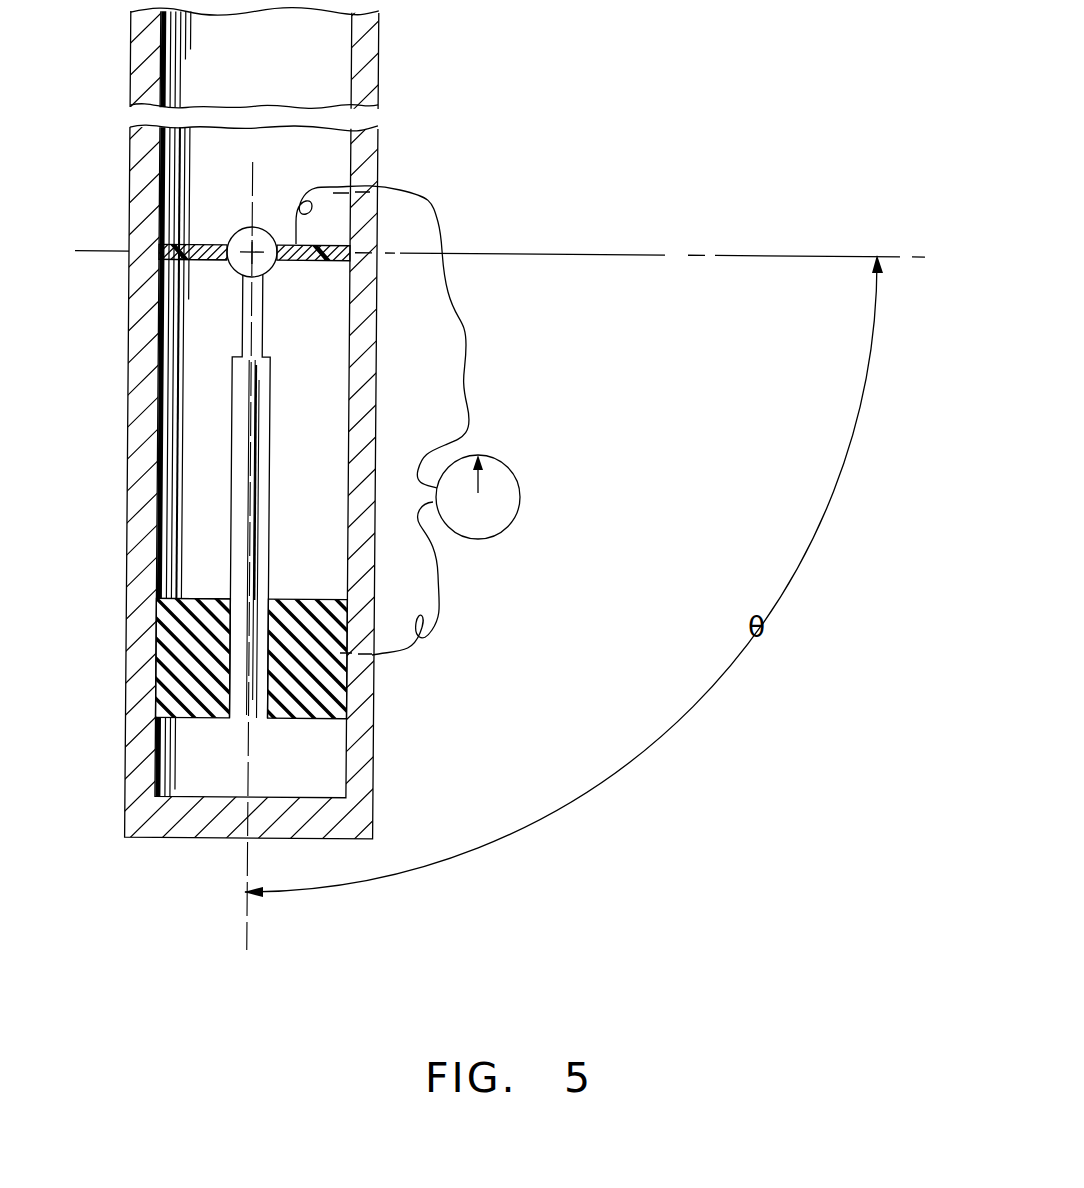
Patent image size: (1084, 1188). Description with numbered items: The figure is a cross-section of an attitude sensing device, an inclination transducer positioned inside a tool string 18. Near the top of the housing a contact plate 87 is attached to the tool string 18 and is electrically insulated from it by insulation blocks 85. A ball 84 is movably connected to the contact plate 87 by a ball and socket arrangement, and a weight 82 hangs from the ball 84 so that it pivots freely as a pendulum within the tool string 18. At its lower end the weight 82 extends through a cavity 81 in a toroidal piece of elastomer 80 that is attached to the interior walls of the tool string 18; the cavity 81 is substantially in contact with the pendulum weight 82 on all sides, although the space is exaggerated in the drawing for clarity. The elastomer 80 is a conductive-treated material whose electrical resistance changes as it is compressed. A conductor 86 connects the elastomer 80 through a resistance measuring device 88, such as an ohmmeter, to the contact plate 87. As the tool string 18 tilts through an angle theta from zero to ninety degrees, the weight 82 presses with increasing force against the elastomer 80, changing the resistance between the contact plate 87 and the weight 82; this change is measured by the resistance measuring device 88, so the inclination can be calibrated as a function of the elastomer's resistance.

The tool string 18 is at (376, 813).
The toroidal elastomer 80 is at (173, 663).
The cavity 81 is at (222, 598).
The weight 82 is at (262, 600).
The ball 84 is at (270, 268).
The insulation blocks 85 is at (186, 245).
The conductor 86 is at (470, 322).
The contact plate 87 is at (219, 262).
The resistance measuring device 88 is at (508, 470).